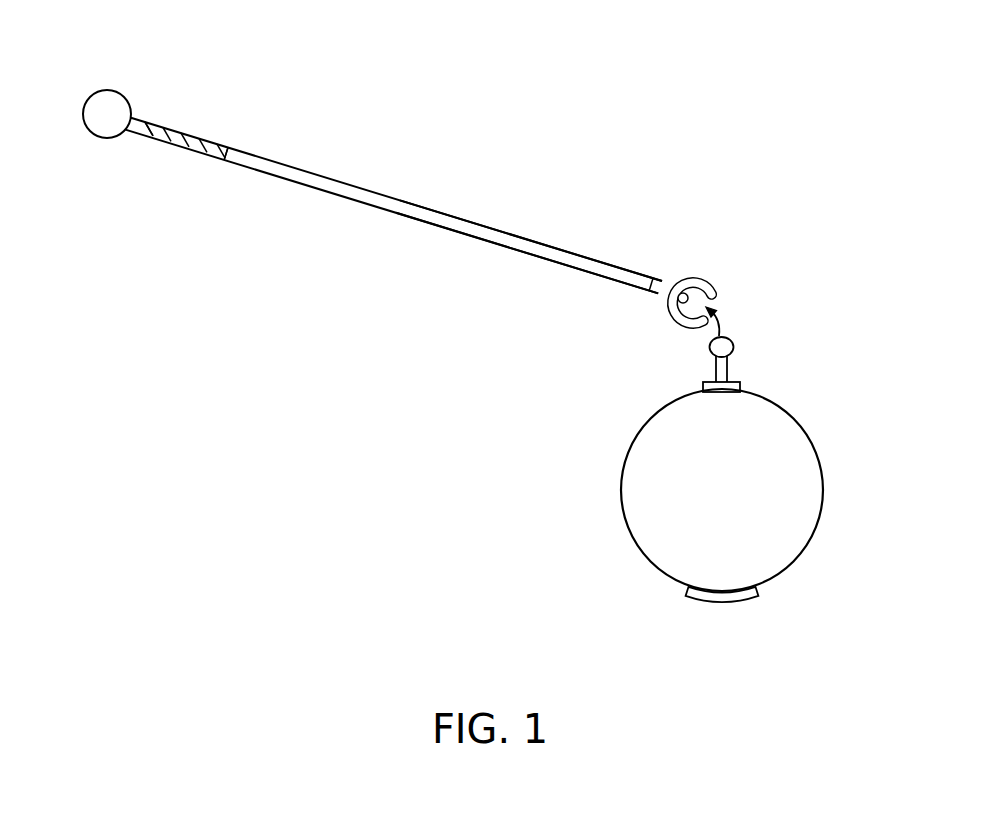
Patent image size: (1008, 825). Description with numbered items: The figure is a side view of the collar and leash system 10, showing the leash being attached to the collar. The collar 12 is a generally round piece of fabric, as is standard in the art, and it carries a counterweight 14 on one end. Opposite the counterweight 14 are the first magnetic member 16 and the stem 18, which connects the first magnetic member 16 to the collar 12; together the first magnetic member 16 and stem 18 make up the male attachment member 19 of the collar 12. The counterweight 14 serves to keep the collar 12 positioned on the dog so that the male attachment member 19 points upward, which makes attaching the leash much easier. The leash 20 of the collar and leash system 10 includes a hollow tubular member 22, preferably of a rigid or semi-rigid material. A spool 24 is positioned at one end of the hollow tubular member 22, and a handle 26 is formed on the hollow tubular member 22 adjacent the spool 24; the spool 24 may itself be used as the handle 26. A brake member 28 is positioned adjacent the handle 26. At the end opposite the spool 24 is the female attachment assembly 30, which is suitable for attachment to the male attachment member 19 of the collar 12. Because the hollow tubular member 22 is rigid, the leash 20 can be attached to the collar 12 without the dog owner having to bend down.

The collar and leash system 10 is at (605, 122).
The collar 12 is at (821, 462).
The counterweight 14 is at (748, 600).
The first magnetic member 16 is at (730, 340).
The stem 18 is at (728, 368).
The male attachment member 19 is at (690, 366).
The leash 20 is at (360, 185).
The hollow tubular member 22 is at (460, 217).
The spool 24 is at (91, 93).
The handle 26 is at (155, 139).
The brake member 28 is at (197, 131).
The female attachment assembly 30 is at (696, 279).